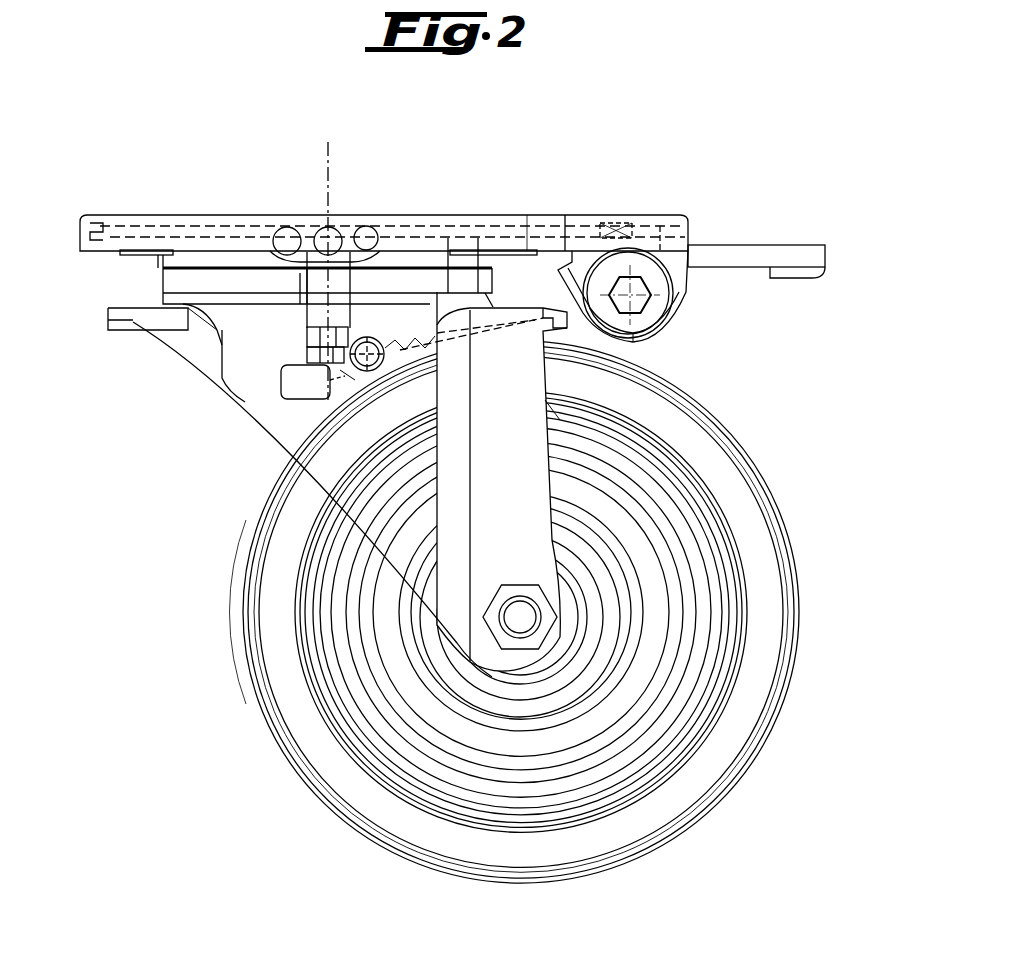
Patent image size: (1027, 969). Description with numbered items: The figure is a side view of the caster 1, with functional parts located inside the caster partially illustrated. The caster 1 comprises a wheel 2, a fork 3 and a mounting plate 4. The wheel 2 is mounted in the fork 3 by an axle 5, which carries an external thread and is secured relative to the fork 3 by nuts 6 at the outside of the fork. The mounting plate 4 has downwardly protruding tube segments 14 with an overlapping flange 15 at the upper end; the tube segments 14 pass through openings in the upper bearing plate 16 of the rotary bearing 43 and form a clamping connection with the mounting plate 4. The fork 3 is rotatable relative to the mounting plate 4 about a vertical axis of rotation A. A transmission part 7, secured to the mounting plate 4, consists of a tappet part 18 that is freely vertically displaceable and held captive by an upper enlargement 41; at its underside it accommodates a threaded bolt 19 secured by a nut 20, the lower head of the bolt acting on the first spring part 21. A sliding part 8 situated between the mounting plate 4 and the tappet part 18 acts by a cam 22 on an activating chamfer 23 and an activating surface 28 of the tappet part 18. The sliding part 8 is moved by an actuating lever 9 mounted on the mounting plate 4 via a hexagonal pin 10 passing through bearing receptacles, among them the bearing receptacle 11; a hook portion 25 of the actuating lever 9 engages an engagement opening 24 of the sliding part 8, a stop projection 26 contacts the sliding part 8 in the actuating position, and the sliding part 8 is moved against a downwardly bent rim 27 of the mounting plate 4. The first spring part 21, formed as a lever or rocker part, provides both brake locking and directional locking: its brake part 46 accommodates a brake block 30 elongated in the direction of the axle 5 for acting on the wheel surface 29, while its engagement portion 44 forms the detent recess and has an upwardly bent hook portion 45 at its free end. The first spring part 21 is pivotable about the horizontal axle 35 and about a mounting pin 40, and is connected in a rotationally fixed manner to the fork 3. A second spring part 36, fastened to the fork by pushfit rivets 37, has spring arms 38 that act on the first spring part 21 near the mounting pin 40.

The caster 1 is at (628, 183).
The wheel 2 is at (305, 737).
The fork 3 is at (400, 560).
The mounting plate 4 is at (225, 222).
The axle 5 is at (517, 623).
The nuts 6 is at (545, 615).
The transmission part 7 is at (290, 320).
The sliding part 8 is at (420, 217).
The actuating lever 9 is at (760, 257).
The pin 10 is at (638, 300).
The bearing receptacle 11 is at (670, 267).
The tube segments 14 is at (118, 253).
The overlapping flange 15 is at (125, 215).
The upper bearing plate 16 is at (200, 265).
The tappet part 18 is at (310, 260).
The threaded bolt 19 is at (315, 362).
The nut 20 is at (310, 340).
The first spring part 21 is at (350, 392).
The cam 22 is at (290, 250).
The activating chamfer 23 is at (365, 233).
The engagement opening 24 is at (610, 217).
The hook portion 25 is at (637, 220).
The stop projection 26 is at (565, 268).
The downwardly bent rim 27 is at (692, 220).
The activating surface 28 is at (338, 247).
The wheel surface 29 is at (245, 598).
The brake block 30 is at (293, 413).
The horizontal axle 35 is at (370, 365).
The second spring part 36 is at (480, 287).
The pushfit rivets 37 is at (548, 340).
The spring arms 38 is at (432, 362).
The mounting pin 40 is at (372, 361).
The upper enlargement 41 is at (200, 332).
The rotary bearing 43 is at (507, 287).
The engagement portion 44 is at (468, 345).
The hook portion 45 is at (448, 300).
The brake part 46 is at (263, 420).
The vertical axis of rotation A is at (328, 142).